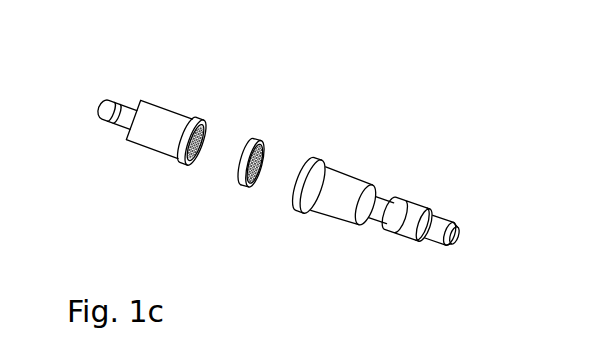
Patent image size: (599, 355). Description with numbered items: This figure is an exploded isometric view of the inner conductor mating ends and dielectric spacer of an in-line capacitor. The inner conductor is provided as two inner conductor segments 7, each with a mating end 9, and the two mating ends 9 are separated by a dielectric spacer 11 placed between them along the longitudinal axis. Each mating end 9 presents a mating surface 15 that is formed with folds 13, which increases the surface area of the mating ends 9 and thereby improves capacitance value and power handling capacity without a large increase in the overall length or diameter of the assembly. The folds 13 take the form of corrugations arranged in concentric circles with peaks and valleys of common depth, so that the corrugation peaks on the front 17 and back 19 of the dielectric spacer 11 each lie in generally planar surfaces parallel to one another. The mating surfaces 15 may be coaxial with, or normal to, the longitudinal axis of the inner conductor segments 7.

The inner conductor segment 7 is at (279, 148).
The mating end 9 is at (283, 135).
The dielectric spacer 11 is at (277, 129).
The fold 13 is at (177, 206).
The mating surface 15 is at (301, 128).
The front 17 is at (278, 222).
The back 19 is at (204, 199).